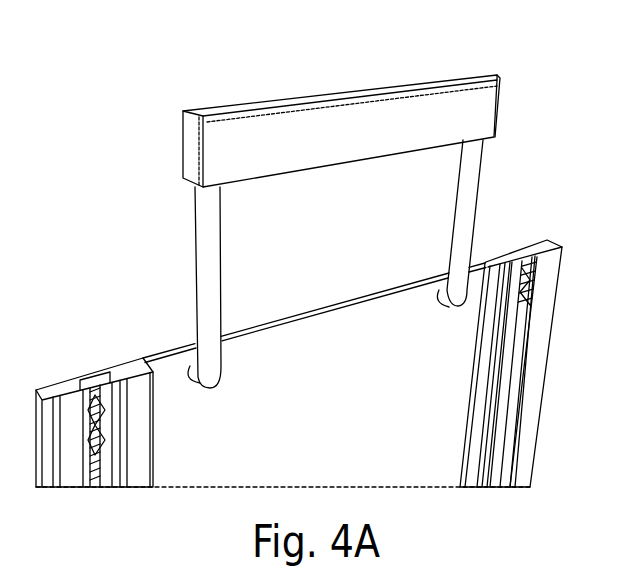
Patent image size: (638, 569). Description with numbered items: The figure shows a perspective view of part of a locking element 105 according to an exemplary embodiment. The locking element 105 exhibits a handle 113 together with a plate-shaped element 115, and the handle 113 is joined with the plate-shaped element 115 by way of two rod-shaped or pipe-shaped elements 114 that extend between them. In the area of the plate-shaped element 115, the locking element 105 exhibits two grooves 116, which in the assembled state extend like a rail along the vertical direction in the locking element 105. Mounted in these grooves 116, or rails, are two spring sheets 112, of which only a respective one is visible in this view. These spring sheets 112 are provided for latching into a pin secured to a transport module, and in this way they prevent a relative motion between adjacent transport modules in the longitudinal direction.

The locking element 105 is at (310, 203).
The spring sheet 112 is at (95, 376).
The handle 113 is at (448, 104).
The rod-shaped element 114 is at (203, 240).
The plate-shaped element 115 is at (158, 354).
The groove 116 is at (97, 484).